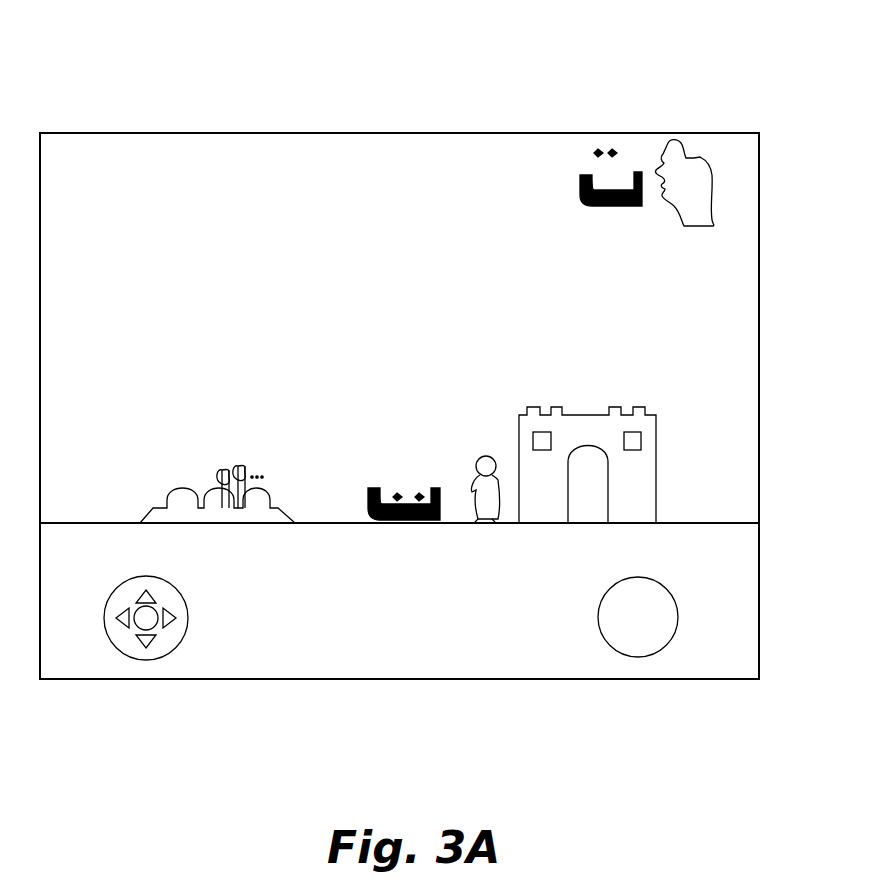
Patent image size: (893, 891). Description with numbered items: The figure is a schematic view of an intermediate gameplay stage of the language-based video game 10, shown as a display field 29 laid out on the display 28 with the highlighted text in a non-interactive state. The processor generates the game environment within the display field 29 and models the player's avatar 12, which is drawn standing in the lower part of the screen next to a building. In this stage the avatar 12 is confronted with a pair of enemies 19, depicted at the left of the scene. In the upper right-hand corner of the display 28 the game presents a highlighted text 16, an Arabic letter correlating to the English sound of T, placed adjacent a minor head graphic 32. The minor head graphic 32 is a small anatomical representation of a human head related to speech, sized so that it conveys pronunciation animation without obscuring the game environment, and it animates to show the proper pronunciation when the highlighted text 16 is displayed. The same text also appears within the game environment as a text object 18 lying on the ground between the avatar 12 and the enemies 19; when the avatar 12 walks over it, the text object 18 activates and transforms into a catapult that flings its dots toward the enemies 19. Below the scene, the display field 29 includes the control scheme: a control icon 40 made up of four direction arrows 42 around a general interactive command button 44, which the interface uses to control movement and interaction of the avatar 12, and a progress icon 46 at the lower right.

The language-based video game 10 is at (363, 67).
The display field 29 is at (249, 140).
The display 28 is at (420, 680).
The highlighted text 16 is at (637, 147).
The minor head graphic 32 is at (700, 157).
The enemies 19 is at (224, 470).
The text object 18 is at (418, 452).
The avatar 12 is at (488, 456).
The control icon 40 is at (166, 584).
The direction arrows 42 is at (141, 597).
The general interactive command button 44 is at (155, 628).
The progress icon 46 is at (662, 650).